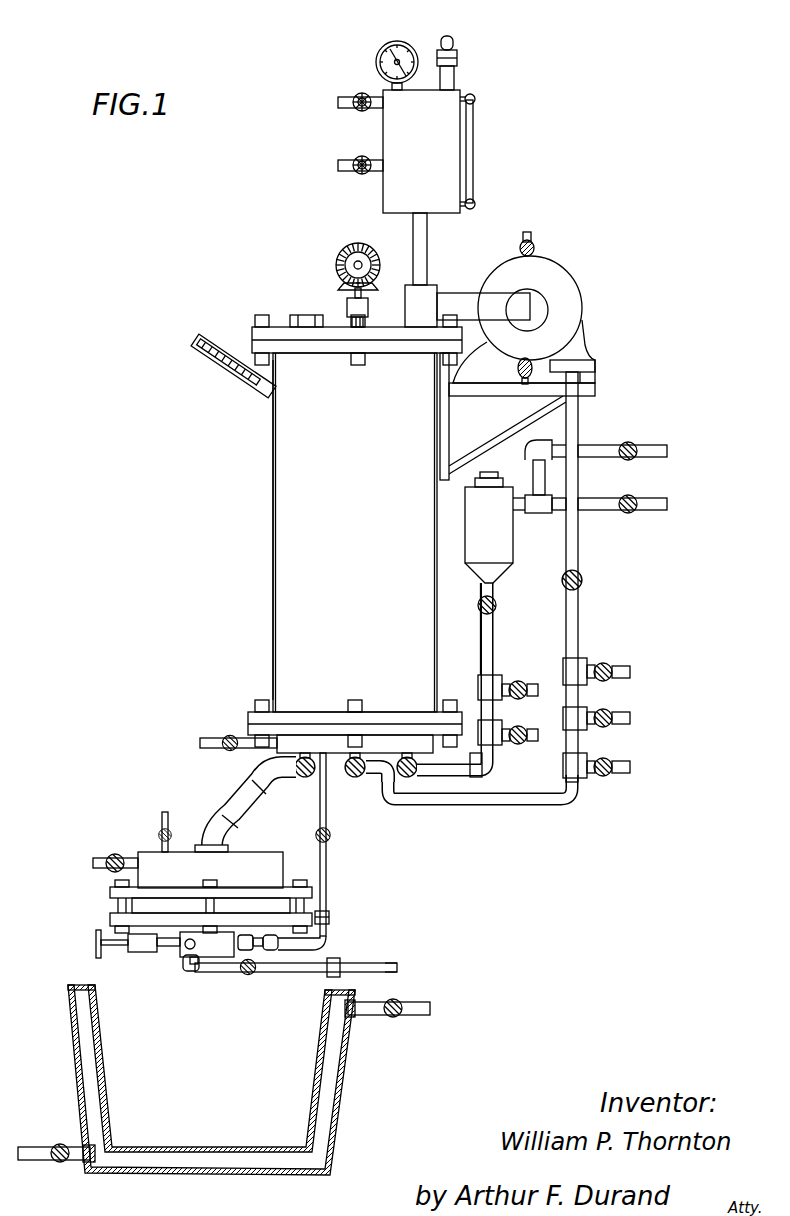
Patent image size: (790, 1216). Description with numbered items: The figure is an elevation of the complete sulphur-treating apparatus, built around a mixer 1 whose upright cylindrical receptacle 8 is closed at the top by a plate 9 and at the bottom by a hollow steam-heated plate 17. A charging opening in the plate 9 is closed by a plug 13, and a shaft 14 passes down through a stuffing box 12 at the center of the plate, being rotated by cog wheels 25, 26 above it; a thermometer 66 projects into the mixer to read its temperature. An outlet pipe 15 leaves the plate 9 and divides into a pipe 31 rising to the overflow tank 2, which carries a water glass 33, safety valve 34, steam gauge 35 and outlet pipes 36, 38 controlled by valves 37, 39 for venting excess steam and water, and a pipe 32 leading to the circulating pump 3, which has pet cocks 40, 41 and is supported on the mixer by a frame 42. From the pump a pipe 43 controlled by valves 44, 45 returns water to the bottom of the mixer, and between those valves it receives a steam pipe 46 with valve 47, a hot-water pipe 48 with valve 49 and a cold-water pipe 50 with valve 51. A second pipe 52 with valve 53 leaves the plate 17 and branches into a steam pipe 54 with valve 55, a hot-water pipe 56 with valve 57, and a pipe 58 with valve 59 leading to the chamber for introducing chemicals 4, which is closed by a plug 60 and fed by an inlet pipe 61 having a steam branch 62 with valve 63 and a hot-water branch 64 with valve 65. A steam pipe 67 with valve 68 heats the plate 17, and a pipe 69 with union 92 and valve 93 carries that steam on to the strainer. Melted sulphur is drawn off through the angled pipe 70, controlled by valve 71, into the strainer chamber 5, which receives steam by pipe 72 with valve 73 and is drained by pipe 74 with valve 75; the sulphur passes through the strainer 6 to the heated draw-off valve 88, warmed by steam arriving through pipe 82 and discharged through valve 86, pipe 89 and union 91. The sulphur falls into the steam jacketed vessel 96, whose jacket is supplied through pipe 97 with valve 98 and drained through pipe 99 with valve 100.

The mixer 1 is at (355, 532).
The overflow tank 2 is at (421, 151).
The circulating pump 3 is at (524, 319).
The chamber for introducing chemicals 4 is at (489, 535).
The strainer chamber 5 is at (210, 870).
The strainer 6 is at (211, 906).
The upright cylindrical receptacle 8 is at (273, 580).
The plate 9 is at (252, 333).
The stuffing box 12 is at (368, 305).
The plug 13 is at (306, 313).
The shaft 14 is at (352, 300).
The outlet pipe 15 is at (421, 306).
The hollow steam-heated plate 17 is at (250, 722).
The cog wheel 25 is at (342, 256).
The cog wheel 26 is at (338, 285).
The pipe 31 is at (427, 250).
The pipe 32 is at (483, 306).
The water glass 33 is at (472, 140).
The safety valve 34 is at (456, 55).
The steam gauge 35 is at (384, 52).
The outlet pipe 36 is at (338, 103).
The valve 37 is at (358, 93).
The outlet pipe 38 is at (340, 170).
The valve 39 is at (362, 155).
The pet cock 40 is at (536, 245).
The pet cock 41 is at (517, 368).
The support frame 42 is at (503, 397).
The pipe 43 is at (497, 806).
The valve 44 is at (584, 582).
The valve 45 is at (352, 778).
The pipe 46 is at (625, 774).
The valve 47 is at (610, 756).
The pipe 48 is at (632, 720).
The valve 49 is at (608, 705).
The pipe 50 is at (628, 668).
The valve 51 is at (604, 663).
The pipe 52 is at (450, 772).
The valve 53 is at (412, 778).
The pipe 54 is at (532, 742).
The valve 55 is at (520, 724).
The pipe 56 is at (528, 684).
The valve 57 is at (502, 684).
The pipe 58 is at (494, 592).
The valve 59 is at (497, 607).
The plug 60 is at (490, 477).
The inlet pipe 61 is at (526, 513).
The pipe 62 is at (658, 510).
The valve 63 is at (626, 495).
The pipe 64 is at (660, 455).
The valve 65 is at (628, 442).
The thermometer 66 is at (205, 356).
The steam pipe 67 is at (205, 738).
The valve 68 is at (224, 751).
The pipe 69 is at (328, 823).
The pipe 70 is at (236, 800).
The valve 71 is at (303, 778).
The pipe 72 is at (168, 820).
The valve 73 is at (171, 836).
The pipe 74 is at (95, 859).
The valve 75 is at (115, 854).
The pipe 82 is at (264, 950).
The valve 86 is at (248, 976).
The heated draw-off valve 88 is at (174, 944).
The pipe 89 is at (398, 959).
The union 91 is at (338, 964).
The union 92 is at (330, 915).
The valve 93 is at (330, 839).
The steam jacketed vessel 96 is at (211, 1080).
The pipe 97 is at (370, 1017).
The valve 98 is at (400, 1017).
The pipe 99 is at (28, 1161).
The valve 100 is at (60, 1144).